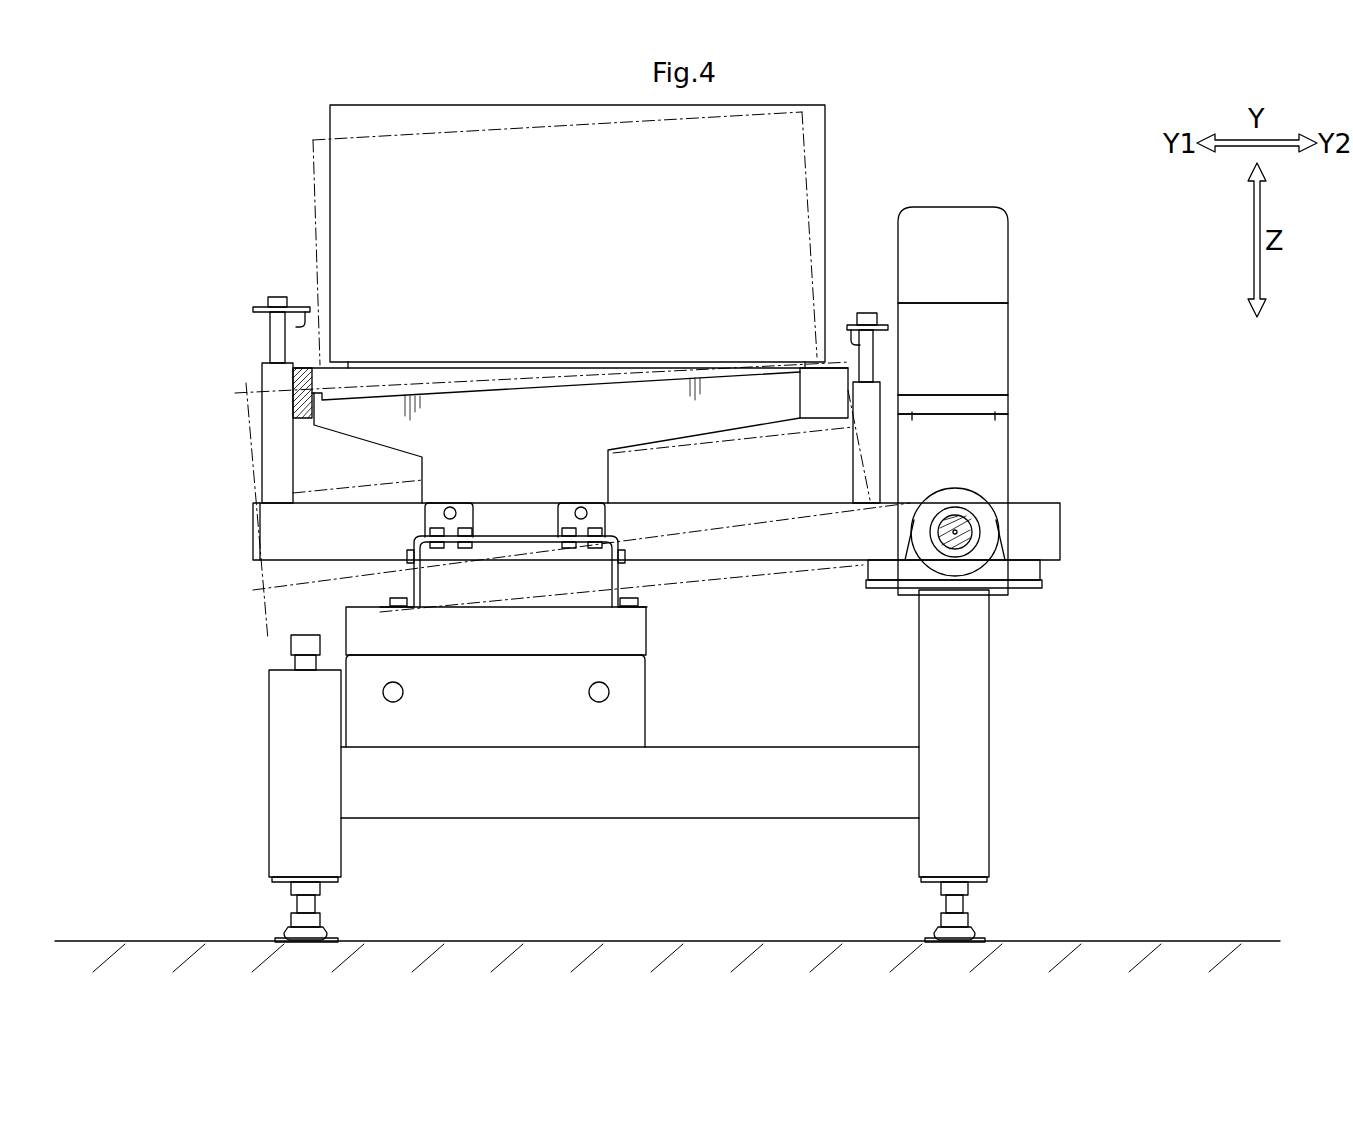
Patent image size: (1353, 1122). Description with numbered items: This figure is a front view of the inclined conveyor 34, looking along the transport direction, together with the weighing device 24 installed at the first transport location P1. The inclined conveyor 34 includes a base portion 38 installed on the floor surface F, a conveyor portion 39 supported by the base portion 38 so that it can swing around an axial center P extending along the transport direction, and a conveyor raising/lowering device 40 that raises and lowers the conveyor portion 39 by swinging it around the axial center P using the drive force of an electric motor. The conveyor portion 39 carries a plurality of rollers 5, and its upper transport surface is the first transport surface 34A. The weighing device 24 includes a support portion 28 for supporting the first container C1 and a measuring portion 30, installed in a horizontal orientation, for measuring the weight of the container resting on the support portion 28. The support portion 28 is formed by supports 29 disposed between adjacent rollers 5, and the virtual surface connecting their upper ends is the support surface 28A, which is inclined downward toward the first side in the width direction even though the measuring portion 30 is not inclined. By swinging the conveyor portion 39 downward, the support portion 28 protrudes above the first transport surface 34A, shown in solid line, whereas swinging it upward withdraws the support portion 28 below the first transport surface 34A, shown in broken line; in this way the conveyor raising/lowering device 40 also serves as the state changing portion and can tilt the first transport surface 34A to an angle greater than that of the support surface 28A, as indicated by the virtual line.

The rollers 5 is at (522, 369).
The weighing device 24 is at (697, 677).
The support portion 28 is at (636, 630).
The support surface 28A is at (521, 382).
The supports 29 is at (656, 425).
The measuring portion 30 is at (630, 705).
The inclined conveyor 34 is at (198, 468).
The first transport surface 34A is at (316, 362).
The base portion 38 is at (975, 668).
The conveyor portion 39 is at (270, 606).
The conveyor raising/lowering device 40 is at (990, 343).
The axial center P is at (957, 530).
The first transport location P1 is at (852, 143).
The first container C1 is at (313, 165).
The floor surface F is at (1107, 940).